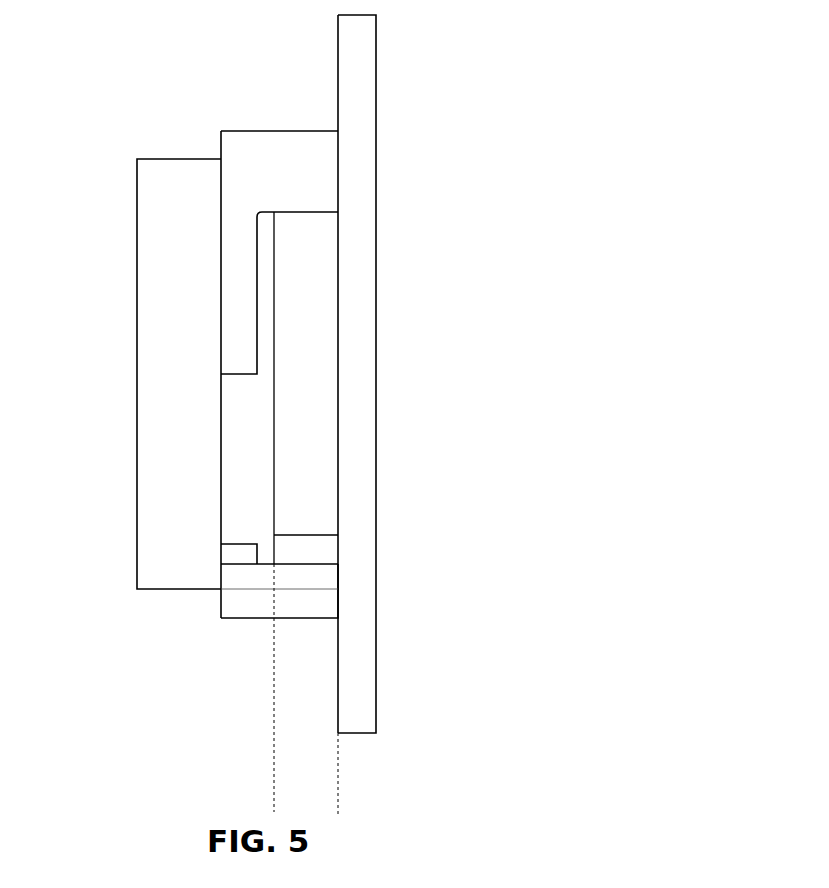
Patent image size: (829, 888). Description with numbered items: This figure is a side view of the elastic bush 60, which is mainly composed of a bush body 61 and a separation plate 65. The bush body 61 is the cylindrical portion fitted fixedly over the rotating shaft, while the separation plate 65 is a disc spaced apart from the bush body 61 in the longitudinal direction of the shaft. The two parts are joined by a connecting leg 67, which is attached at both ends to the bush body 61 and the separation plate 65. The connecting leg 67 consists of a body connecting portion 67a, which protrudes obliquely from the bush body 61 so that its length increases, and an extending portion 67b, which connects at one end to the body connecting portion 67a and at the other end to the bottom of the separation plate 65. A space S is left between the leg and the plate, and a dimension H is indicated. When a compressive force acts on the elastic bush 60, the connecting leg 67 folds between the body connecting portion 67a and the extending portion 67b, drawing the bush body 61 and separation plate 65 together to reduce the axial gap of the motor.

The elastic bush 60 is at (382, 132).
The separation plate 65 is at (368, 247).
The bush body 61 is at (160, 361).
The connecting leg 67 is at (176, 374).
The extending portion 67b is at (287, 173).
The body connecting portion 67a is at (237, 250).
The space S is at (303, 379).
The height dimension H is at (306, 689).